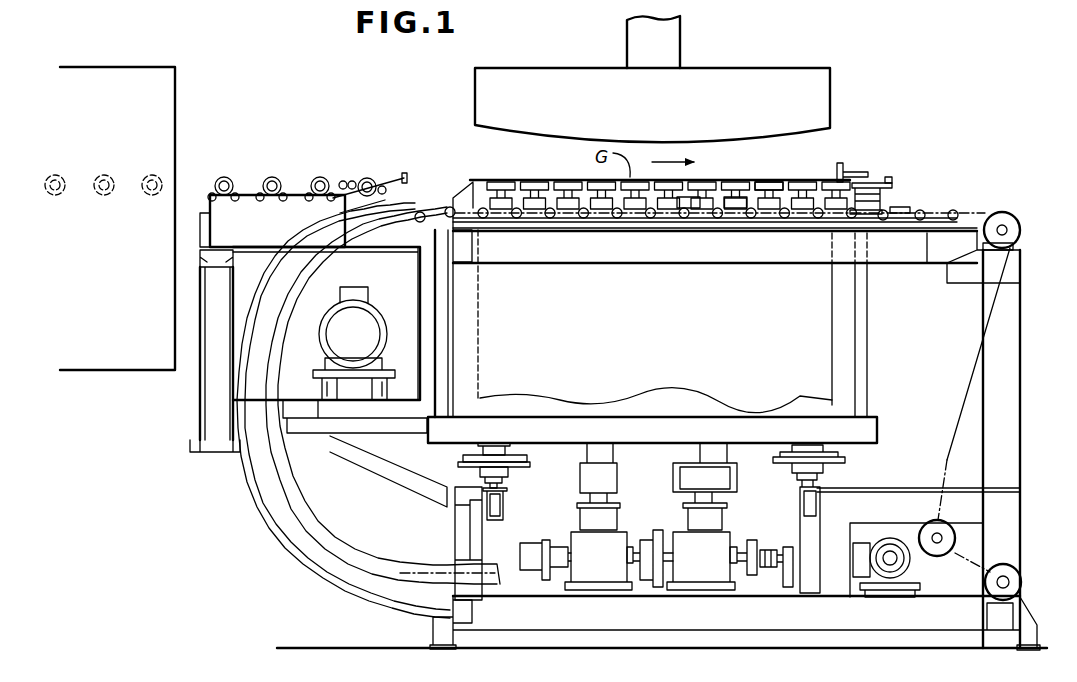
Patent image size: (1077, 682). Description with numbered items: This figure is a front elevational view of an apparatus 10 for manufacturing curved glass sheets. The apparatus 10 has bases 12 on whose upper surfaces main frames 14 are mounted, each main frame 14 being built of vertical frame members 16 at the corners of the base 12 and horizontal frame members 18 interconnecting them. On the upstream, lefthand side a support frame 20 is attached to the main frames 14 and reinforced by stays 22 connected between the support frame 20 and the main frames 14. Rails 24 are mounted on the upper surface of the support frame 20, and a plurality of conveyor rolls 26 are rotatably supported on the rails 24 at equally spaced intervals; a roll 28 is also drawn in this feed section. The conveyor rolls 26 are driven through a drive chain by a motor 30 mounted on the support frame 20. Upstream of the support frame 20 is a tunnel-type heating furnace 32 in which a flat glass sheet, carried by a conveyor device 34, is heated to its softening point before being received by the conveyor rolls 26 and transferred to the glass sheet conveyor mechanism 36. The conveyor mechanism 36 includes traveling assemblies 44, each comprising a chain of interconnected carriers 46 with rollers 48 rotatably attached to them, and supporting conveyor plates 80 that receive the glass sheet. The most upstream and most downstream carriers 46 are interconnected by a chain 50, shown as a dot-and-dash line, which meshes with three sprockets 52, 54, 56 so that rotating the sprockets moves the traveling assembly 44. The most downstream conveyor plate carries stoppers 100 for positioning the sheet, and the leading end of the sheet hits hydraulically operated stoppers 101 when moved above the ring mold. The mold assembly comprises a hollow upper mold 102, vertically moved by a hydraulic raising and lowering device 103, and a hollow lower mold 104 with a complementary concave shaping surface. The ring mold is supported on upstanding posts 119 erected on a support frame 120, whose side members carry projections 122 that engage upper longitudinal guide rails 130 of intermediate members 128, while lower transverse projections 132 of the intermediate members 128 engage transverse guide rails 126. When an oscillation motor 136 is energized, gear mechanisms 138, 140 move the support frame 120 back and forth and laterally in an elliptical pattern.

The apparatus 10 is at (231, 565).
The base 12 is at (807, 610).
The main frame 14 is at (1024, 283).
The vertical frame member 16 is at (467, 508).
The horizontal frame member 18 is at (897, 253).
The support frame 20 is at (217, 410).
The stay 22 is at (393, 468).
The rail 24 is at (218, 210).
The conveyor roll 26 is at (280, 182).
The feed rollers 28 is at (259, 186).
The motor 30 is at (368, 327).
The heating furnace 32 is at (137, 372).
The conveyor device 34 is at (112, 180).
The glass sheet conveyor mechanism 36 is at (466, 163).
The traveling assembly 44 is at (601, 219).
The carrier 46 is at (700, 210).
The roller 48 is at (753, 220).
The chain 50 is at (960, 413).
The sprocket 52 is at (1017, 580).
The sprocket 54 is at (1000, 220).
The sprocket 56 is at (937, 520).
The conveyor plate 80 is at (763, 181).
The stopper 100 is at (893, 177).
The stopper 101 is at (840, 163).
The upper mold 102 is at (788, 80).
The hydraulic raising and lowering device 103 is at (672, 43).
The lower mold 104 is at (820, 335).
The upstanding post 119 is at (863, 360).
The support frame 120 is at (870, 432).
The projection 122 is at (500, 452).
The transverse guide rail 126 is at (500, 497).
The intermediate member 128 is at (528, 467).
The upper longitudinal guide rail 130 is at (463, 450).
The lower transverse projection 132 is at (510, 477).
The oscillation motor 136 is at (887, 563).
The gear mechanism 138 is at (702, 573).
The gear mechanism 140 is at (598, 570).